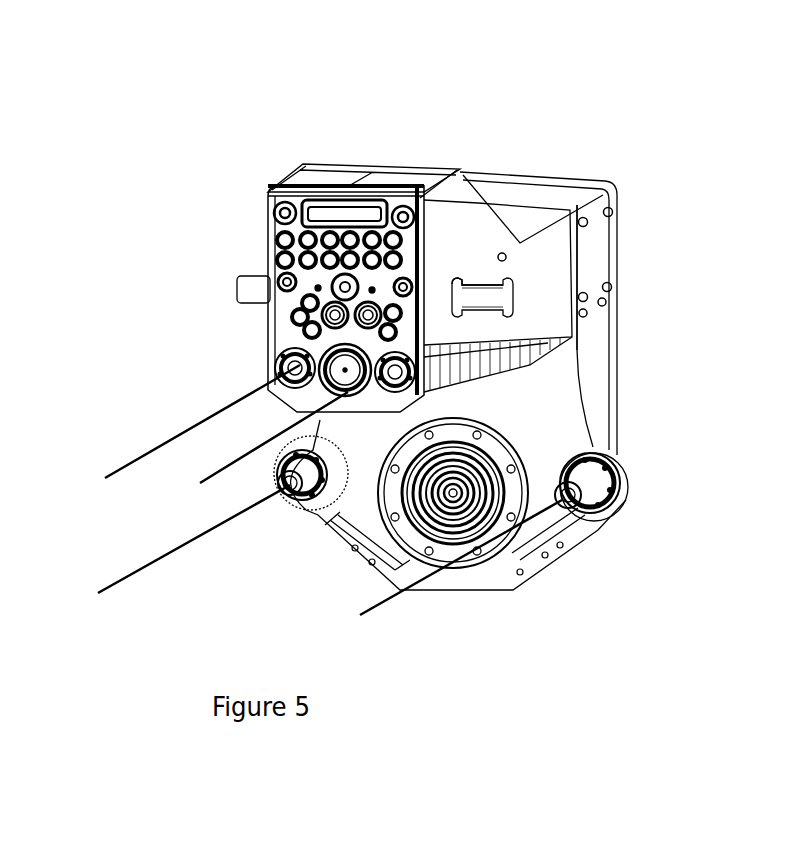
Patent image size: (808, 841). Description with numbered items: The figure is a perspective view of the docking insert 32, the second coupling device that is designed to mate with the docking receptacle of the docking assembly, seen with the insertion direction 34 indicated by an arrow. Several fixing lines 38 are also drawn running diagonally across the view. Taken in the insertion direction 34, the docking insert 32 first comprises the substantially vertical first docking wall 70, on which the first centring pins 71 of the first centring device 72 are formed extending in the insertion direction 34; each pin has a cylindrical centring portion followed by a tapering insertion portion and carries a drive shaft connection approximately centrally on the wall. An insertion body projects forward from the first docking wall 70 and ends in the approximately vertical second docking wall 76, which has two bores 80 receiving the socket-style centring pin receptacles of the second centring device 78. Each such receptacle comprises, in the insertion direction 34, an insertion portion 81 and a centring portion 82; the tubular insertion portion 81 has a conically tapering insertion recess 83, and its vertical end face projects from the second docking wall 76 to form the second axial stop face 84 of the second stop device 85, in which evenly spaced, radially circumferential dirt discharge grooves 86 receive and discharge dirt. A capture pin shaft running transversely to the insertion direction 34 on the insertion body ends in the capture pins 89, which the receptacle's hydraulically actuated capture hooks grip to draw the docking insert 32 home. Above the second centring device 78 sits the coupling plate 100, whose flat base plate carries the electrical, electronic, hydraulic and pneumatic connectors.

The docking insert 32 is at (270, 108).
The insertion direction 34 is at (627, 590).
The fixing lines 38 is at (377, 605).
The first docking wall 70 is at (532, 402).
The first centring pins 71 is at (422, 449).
The first centring device 72 is at (422, 449).
The second docking wall 76 is at (585, 302).
The second centring device 78 is at (621, 496).
The bores 80 is at (426, 306).
The insertion portion 81 is at (426, 306).
The centring portion 82 is at (426, 306).
The insertion recess 83 is at (426, 306).
The second axial stop face 84 is at (426, 306).
The second stop device 85 is at (426, 306).
The dirt discharge grooves 86 is at (425, 372).
The capture pins 89 is at (490, 285).
The coupling plate 100 is at (393, 200).